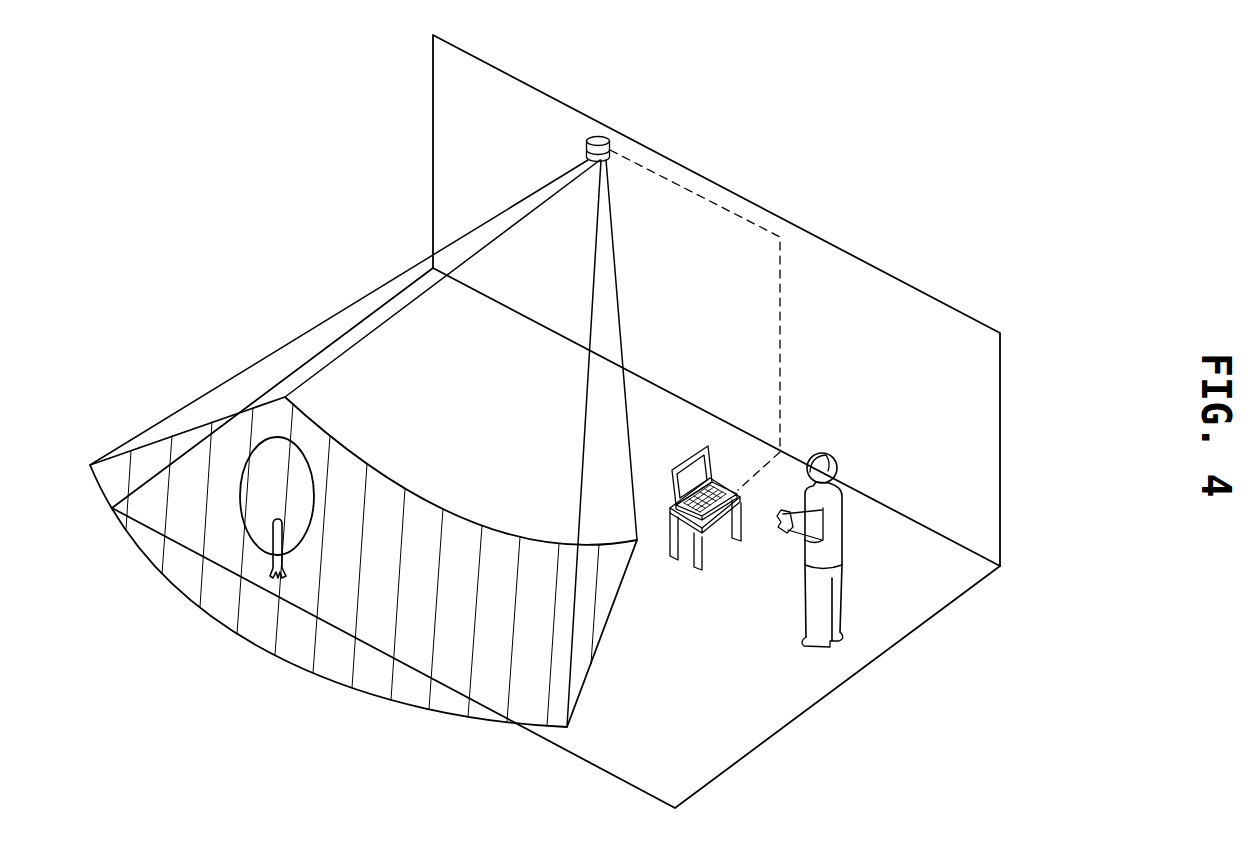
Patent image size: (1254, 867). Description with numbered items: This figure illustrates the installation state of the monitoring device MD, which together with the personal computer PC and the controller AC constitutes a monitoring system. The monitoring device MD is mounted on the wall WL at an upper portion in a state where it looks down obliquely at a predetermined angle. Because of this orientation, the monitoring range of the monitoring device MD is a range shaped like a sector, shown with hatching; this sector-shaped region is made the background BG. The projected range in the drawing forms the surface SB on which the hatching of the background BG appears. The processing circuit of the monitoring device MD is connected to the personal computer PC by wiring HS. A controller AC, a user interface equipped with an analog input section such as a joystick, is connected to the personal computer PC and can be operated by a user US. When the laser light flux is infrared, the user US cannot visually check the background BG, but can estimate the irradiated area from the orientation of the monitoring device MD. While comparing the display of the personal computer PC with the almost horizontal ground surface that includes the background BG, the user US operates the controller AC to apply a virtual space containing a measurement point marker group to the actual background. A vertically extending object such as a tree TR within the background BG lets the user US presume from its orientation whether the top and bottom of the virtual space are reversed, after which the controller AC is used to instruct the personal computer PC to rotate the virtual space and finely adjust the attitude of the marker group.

The monitoring device MD is at (598, 136).
The wall WL is at (948, 333).
The screen / projection surface SB is at (368, 293).
The background BG is at (387, 497).
The tree image TR is at (243, 463).
The wiring HS is at (778, 310).
The personal computer PC is at (693, 458).
The user US is at (842, 465).
The controller AC is at (775, 522).